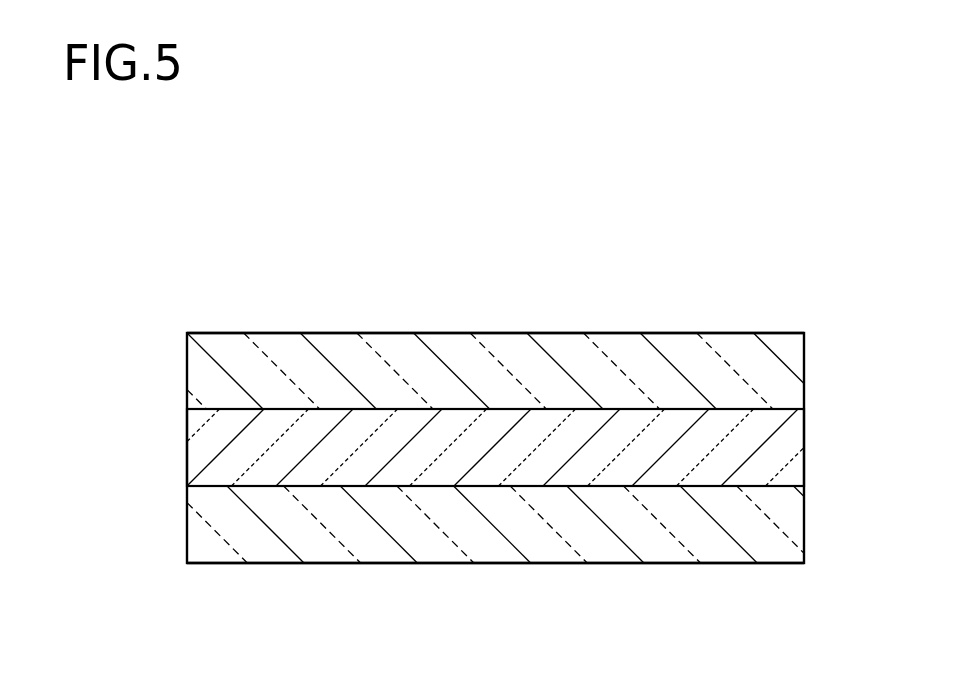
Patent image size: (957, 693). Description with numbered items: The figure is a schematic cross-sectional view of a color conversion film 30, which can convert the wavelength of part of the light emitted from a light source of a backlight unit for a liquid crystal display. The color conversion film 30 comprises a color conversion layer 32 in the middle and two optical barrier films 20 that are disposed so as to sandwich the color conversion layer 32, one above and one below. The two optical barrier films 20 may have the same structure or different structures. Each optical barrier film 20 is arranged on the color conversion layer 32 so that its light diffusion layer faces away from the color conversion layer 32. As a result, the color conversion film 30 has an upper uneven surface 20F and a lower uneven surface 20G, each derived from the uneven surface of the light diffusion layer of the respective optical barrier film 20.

The color conversion film 30 is at (526, 401).
The optical barrier film 20 is at (526, 451).
The color conversion layer 32 is at (778, 457).
The uneven surface 20F is at (493, 333).
The uneven surface 20G is at (498, 565).